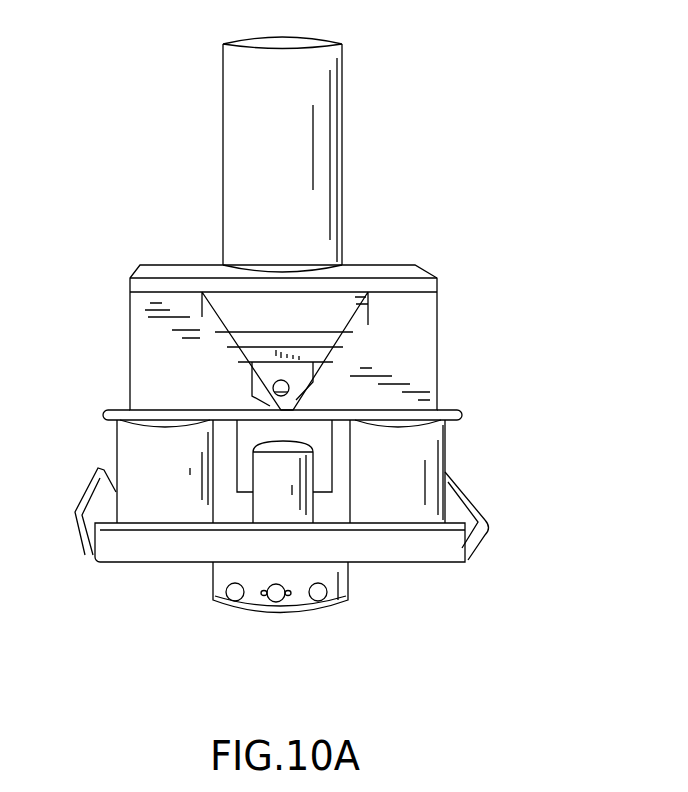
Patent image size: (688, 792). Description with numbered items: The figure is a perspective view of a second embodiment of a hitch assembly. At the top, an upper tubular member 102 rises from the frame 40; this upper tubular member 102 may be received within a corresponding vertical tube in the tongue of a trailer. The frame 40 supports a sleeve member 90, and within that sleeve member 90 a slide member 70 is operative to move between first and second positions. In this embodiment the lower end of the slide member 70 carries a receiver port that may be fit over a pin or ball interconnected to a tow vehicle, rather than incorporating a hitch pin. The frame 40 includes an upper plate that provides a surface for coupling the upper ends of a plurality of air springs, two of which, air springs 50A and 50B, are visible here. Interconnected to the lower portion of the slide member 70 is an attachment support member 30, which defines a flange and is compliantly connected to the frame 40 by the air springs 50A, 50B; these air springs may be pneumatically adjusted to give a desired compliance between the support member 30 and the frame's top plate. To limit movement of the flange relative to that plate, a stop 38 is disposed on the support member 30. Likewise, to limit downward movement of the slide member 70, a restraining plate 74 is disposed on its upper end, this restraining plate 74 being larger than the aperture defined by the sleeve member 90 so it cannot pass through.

The upper tubular member 102 is at (322, 166).
The frame 40 is at (437, 296).
The restraining plate 74 is at (262, 354).
The air spring 50A is at (115, 430).
The air spring 50B is at (445, 432).
The slide member 70 is at (240, 505).
The stop 38 is at (284, 488).
The attachment support member 30 is at (113, 545).
The sleeve member 90 is at (318, 438).